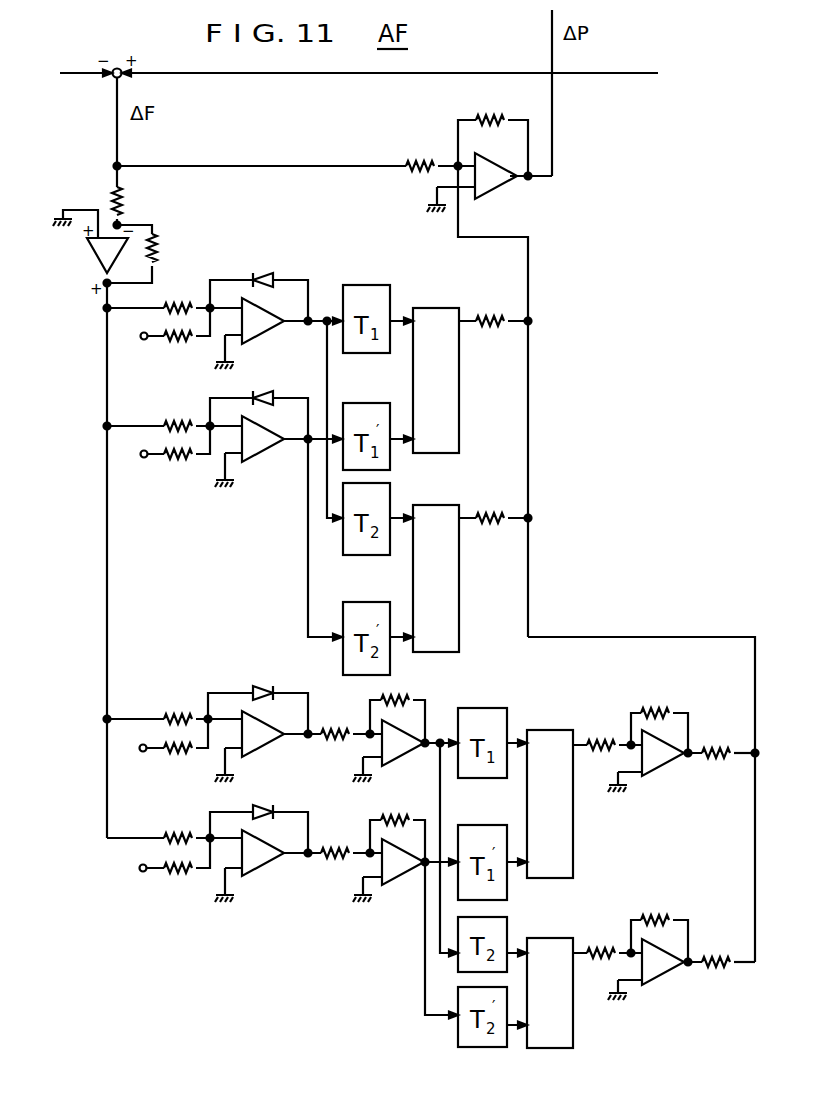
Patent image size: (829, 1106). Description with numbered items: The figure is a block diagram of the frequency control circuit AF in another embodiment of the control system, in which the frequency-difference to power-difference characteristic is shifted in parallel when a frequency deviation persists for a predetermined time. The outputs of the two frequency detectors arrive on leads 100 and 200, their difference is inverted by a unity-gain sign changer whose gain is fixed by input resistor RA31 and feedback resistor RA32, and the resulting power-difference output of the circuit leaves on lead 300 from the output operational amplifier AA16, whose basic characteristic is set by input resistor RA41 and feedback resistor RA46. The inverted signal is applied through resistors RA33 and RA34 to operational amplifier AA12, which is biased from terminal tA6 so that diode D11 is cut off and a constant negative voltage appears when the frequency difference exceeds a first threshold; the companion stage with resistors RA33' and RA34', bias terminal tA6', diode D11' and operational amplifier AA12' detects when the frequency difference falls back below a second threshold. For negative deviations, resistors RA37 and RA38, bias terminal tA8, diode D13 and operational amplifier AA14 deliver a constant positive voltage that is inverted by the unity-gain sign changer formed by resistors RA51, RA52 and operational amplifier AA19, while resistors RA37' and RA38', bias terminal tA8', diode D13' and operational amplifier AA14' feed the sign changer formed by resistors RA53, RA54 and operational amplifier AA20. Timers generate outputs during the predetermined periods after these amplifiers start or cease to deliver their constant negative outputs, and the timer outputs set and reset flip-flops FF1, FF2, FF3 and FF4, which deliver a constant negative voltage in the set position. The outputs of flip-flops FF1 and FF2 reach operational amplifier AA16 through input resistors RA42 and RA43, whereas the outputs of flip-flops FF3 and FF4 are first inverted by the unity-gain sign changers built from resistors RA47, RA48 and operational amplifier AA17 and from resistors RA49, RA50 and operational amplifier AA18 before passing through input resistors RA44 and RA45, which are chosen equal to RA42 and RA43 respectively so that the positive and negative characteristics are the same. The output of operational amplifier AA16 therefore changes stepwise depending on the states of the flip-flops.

The lead 100 is at (78, 74).
The lead 200 is at (610, 74).
The lead 300 is at (553, 58).
The input resistor RA31 is at (131, 222).
The feedback resistor RA32 is at (164, 270).
The resistor RA33 is at (158, 296).
The resistor RA34 is at (180, 342).
The bias terminal tA6 is at (133, 341).
The diode D11 is at (259, 282).
The operational amplifier AA12 is at (276, 329).
The resistor RA33' is at (159, 414).
The resistor RA34' is at (181, 460).
The bias terminal tA6' is at (131, 459).
The diode D11' is at (259, 400).
The operational amplifier AA12' is at (276, 447).
The input resistor RA41 is at (405, 170).
The feedback resistor RA46 is at (475, 122).
The operational amplifier AA16 is at (492, 193).
The flip-flop FF1 is at (418, 292).
The flip-flop FF2 is at (418, 489).
The input resistor RA42 is at (476, 326).
The input resistor RA43 is at (476, 523).
The resistor RA37 is at (157, 707).
The resistor RA38 is at (182, 750).
The bias terminal tA8 is at (131, 755).
The diode D13 is at (258, 696).
The operational amplifier AA14 is at (260, 745).
The resistor RA51 is at (359, 738).
The resistor RA52 is at (390, 686).
The operational amplifier AA19 is at (417, 750).
The resistor RA37' is at (166, 825).
The resistor RA38' is at (181, 870).
The bias terminal tA8' is at (128, 875).
The diode D13' is at (259, 815).
The operational amplifier AA14' is at (261, 864).
The resistor RA53 is at (359, 857).
The resistor RA54 is at (390, 806).
The operational amplifier AA20 is at (412, 870).
The flip-flop FF3 is at (532, 716).
The flip-flop FF4 is at (532, 924).
The resistor RA47 is at (592, 748).
The resistor RA48 is at (645, 700).
The operational amplifier AA17 is at (678, 760).
The input resistor RA44 is at (698, 756).
The resistor RA49 is at (592, 956).
The resistor RA50 is at (645, 907).
The operational amplifier AA18 is at (678, 969).
The input resistor RA45 is at (698, 965).